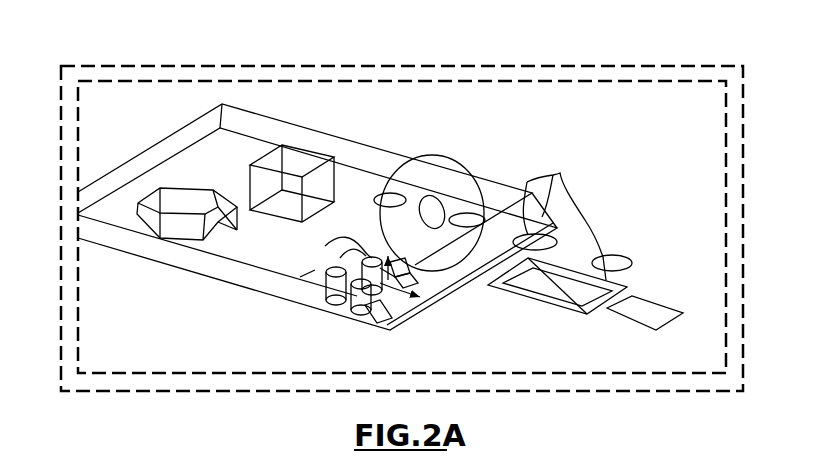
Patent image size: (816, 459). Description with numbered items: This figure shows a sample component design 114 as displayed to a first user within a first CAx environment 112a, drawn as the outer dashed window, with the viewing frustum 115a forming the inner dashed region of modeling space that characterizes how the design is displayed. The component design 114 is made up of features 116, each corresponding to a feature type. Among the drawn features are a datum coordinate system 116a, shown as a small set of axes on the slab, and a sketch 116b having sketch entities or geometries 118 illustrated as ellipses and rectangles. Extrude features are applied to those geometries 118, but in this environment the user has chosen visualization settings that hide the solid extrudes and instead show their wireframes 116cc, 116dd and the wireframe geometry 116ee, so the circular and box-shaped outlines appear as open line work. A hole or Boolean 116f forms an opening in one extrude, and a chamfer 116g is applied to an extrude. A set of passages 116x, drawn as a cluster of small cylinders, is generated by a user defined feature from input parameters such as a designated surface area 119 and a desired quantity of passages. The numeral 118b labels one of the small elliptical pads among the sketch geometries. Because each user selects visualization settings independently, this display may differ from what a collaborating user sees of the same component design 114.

The first CAx environment 112a is at (197, 64).
The viewing frustum 115a is at (108, 80).
The component design 114 is at (166, 136).
The features 116 is at (548, 178).
The datum coordinate system 116a is at (378, 300).
The sketch 116b is at (640, 280).
The wireframe 116cc is at (372, 145).
The wireframe 116dd is at (318, 150).
The wireframe geometry 116ee is at (455, 161).
The hole or Boolean 116f is at (178, 186).
The chamfer 116g is at (375, 312).
The set of passages 116x is at (345, 262).
The sketch entities or geometries 118 is at (452, 291).
The circuit board pad 118b is at (468, 213).
The surface area 119 is at (312, 272).